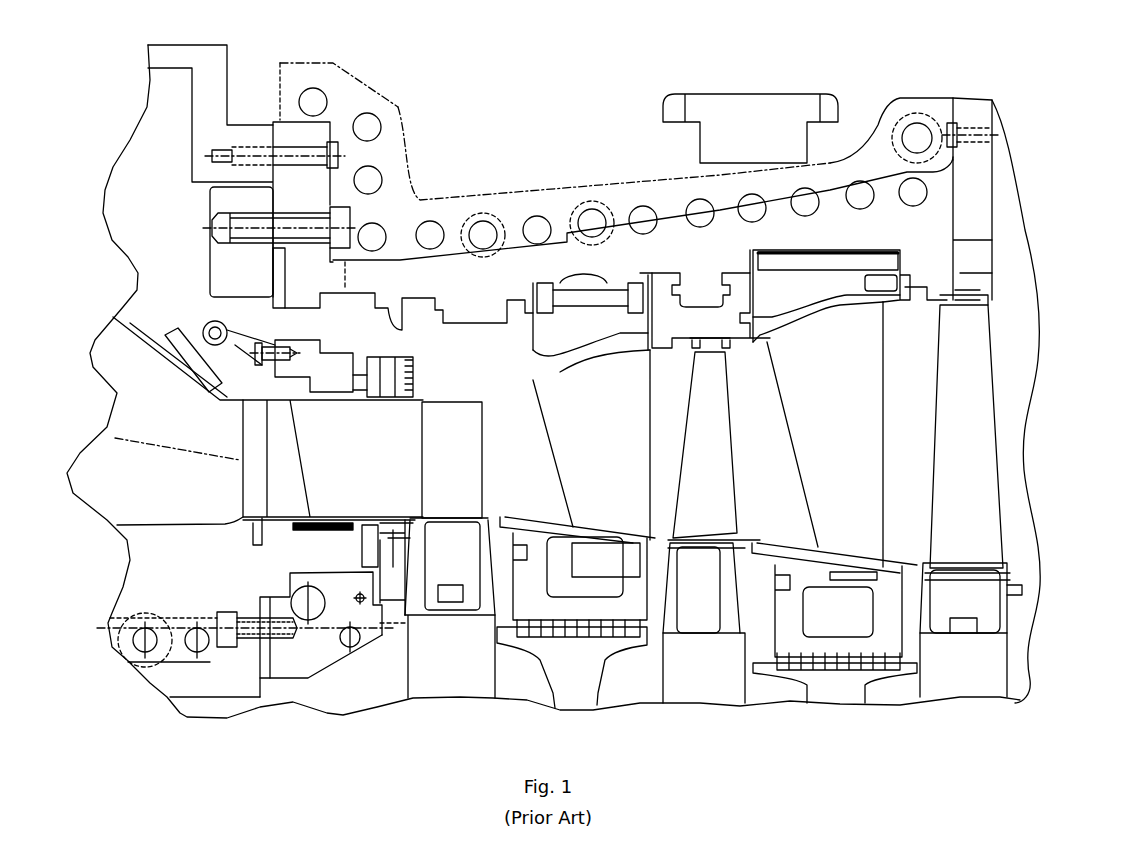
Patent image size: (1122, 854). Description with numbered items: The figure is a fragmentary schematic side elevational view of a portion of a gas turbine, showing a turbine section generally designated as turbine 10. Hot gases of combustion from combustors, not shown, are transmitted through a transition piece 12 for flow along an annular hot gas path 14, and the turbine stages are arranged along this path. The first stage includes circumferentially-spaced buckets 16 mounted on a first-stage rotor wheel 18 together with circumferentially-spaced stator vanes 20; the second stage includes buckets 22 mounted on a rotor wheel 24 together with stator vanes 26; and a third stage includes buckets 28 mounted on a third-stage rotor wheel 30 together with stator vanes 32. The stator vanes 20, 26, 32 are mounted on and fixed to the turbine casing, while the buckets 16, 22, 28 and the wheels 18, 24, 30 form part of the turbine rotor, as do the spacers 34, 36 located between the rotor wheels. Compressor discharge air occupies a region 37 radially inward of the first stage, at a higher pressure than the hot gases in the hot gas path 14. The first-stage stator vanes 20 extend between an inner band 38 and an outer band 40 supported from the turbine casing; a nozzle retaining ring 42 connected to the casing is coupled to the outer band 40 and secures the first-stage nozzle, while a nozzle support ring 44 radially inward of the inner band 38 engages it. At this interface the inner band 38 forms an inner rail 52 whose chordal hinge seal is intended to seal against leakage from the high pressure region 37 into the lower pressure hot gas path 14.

The turbine 10 is at (481, 134).
The transition piece 12 is at (130, 388).
The hot gas path 14 is at (510, 400).
The buckets 16 is at (473, 428).
The first-stage rotor wheel 18 is at (433, 682).
The stator vanes 20 is at (333, 432).
The buckets 22 is at (727, 437).
The rotor wheel 24 is at (707, 688).
The stator vanes 26 is at (611, 417).
The buckets 28 is at (990, 430).
The third-stage rotor wheel 30 is at (967, 692).
The stator vanes 32 is at (849, 413).
The spacer 34 is at (580, 687).
The spacer 36 is at (838, 692).
The region 37 is at (231, 583).
The inner band 38 is at (337, 517).
The outer band 40 is at (360, 402).
The nozzle retaining ring 42 is at (303, 348).
The nozzle support ring 44 is at (290, 672).
The inner rail 52 is at (368, 530).